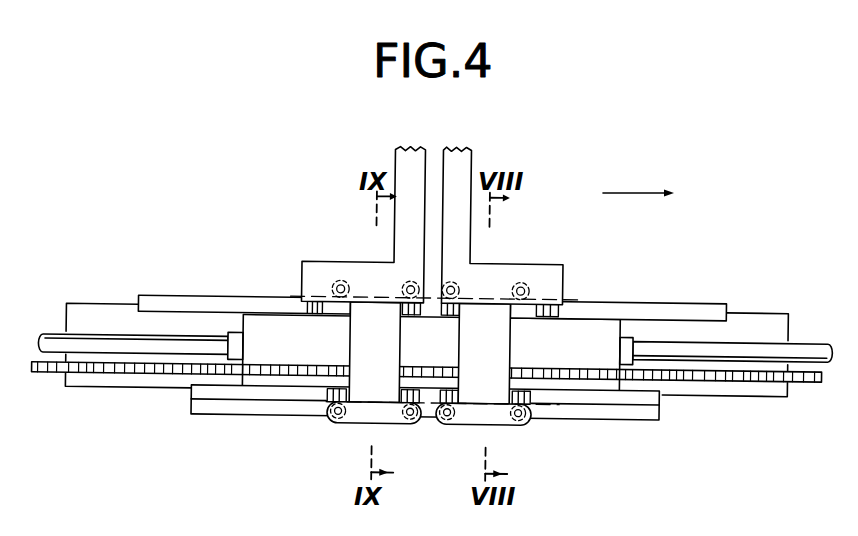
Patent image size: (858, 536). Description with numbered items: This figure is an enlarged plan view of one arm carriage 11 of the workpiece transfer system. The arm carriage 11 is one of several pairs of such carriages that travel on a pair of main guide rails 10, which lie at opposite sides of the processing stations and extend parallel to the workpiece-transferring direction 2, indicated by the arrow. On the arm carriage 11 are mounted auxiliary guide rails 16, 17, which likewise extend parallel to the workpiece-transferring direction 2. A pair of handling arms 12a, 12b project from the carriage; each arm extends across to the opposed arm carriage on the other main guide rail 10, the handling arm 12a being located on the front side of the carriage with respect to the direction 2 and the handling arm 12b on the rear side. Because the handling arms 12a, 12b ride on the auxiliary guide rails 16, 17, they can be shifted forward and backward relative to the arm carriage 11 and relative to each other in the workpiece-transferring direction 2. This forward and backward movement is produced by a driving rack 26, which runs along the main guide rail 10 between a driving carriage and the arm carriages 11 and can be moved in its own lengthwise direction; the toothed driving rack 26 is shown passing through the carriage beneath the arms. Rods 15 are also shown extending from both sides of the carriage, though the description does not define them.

The workpiece-transferring direction 2 is at (629, 191).
The main guide rail 10 is at (750, 316).
The arm carriage 11 is at (583, 321).
The handling arm 12a is at (455, 147).
The handling arm 12b is at (400, 146).
The guide rod 15 is at (50, 338).
The auxiliary guide rail 16 is at (262, 395).
The auxiliary guide rail 17 is at (210, 300).
The driving rack 26 is at (51, 373).